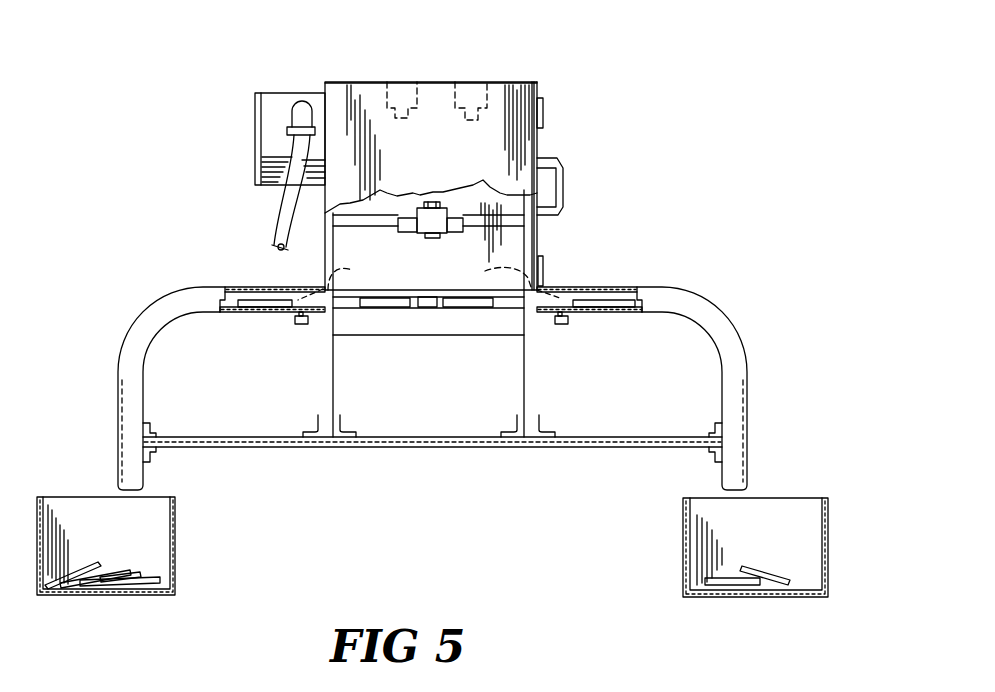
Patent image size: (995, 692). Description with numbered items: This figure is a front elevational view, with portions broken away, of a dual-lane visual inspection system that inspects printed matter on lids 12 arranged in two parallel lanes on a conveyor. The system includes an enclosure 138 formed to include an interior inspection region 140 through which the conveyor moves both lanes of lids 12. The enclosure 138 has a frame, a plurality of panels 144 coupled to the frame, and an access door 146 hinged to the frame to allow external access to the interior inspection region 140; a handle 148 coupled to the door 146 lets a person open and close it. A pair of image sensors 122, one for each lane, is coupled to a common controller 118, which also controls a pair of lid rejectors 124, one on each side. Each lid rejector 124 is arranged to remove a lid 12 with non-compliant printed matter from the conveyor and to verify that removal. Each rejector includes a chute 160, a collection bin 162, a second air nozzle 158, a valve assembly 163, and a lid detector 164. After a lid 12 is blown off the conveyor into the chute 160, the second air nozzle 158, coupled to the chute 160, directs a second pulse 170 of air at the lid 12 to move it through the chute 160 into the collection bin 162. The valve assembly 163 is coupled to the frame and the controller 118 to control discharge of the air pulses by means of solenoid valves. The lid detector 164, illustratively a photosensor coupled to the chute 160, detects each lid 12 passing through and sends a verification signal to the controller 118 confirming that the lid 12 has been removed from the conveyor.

The lids 12 is at (255, 300).
The common controller 118 is at (273, 105).
The image sensors 122 is at (418, 92).
The lid rejectors 124 is at (222, 338).
The enclosure 138 is at (452, 80).
The interior inspection region 140 is at (513, 244).
The panels 144 is at (364, 90).
The access door 146 is at (541, 152).
The handle 148 is at (565, 181).
The second air nozzle 158 is at (430, 272).
The chute 160 is at (165, 318).
The collection bin 162 is at (177, 535).
The valve assembly 163 is at (428, 238).
The lid detector 164 is at (298, 324).
The second pulse of air 170 is at (298, 300).